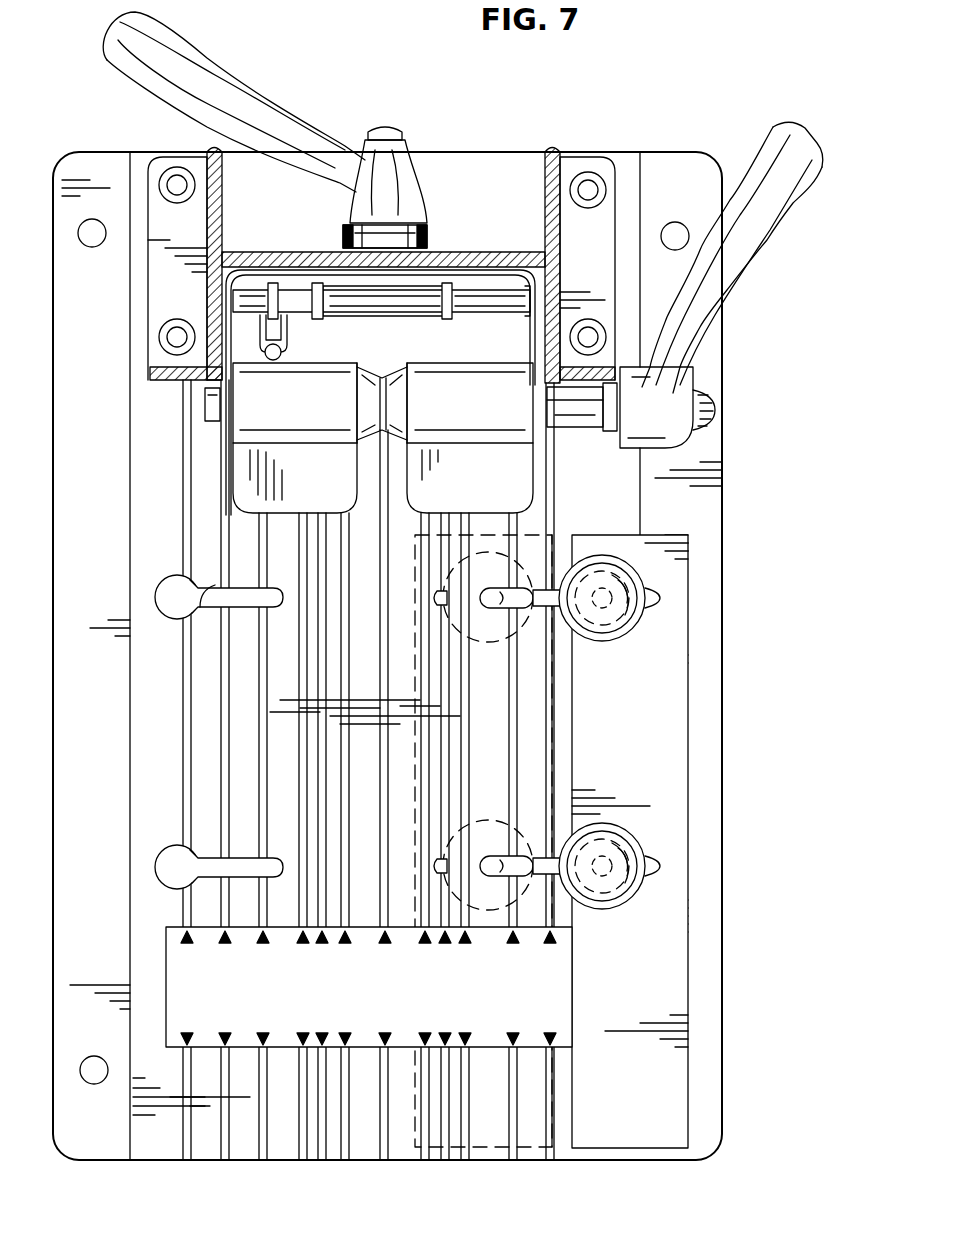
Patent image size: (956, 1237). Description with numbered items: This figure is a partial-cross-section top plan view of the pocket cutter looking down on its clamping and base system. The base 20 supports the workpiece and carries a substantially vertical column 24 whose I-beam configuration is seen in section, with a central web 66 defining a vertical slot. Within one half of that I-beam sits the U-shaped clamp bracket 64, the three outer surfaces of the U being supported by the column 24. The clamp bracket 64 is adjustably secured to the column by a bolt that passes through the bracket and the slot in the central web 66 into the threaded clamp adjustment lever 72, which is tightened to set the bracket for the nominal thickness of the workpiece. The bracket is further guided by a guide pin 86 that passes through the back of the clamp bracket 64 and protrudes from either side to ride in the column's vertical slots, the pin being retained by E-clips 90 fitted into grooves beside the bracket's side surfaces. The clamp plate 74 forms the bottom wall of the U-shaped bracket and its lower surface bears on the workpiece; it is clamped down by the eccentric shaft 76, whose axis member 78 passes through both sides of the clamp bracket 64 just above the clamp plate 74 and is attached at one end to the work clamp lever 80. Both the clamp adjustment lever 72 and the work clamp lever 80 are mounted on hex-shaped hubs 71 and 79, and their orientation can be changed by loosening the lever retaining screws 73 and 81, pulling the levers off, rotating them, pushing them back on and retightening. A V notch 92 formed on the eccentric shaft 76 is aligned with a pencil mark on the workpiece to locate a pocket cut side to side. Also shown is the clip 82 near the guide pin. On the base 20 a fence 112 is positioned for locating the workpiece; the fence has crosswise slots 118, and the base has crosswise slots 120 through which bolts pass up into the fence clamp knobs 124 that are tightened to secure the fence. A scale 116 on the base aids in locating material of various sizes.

The base 20 is at (72, 788).
The column 24 is at (560, 138).
The clamp bracket 64 is at (225, 462).
The central web 66 is at (455, 256).
The hex-shaped hub 71 is at (390, 230).
The clamp adjustment lever 72 is at (192, 58).
The lever retaining screw 73 is at (372, 128).
The clamp plate 74 is at (452, 489).
The eccentric shaft 76 is at (452, 415).
The axis member 78 is at (205, 400).
The hex-shaped hub 79 is at (628, 406).
The work clamp lever 80 is at (790, 197).
The lever retaining screw 81 is at (715, 410).
The clip 82 is at (290, 342).
The guide pin 86 is at (472, 300).
The E-clip 90 is at (270, 288).
The V notch 92 is at (365, 408).
The fence 112 is at (645, 757).
The scale 116 is at (311, 995).
The crosswise slot 118 is at (662, 598).
The crosswise slot 120 is at (185, 614).
The fence clamp knob 124 is at (612, 620).